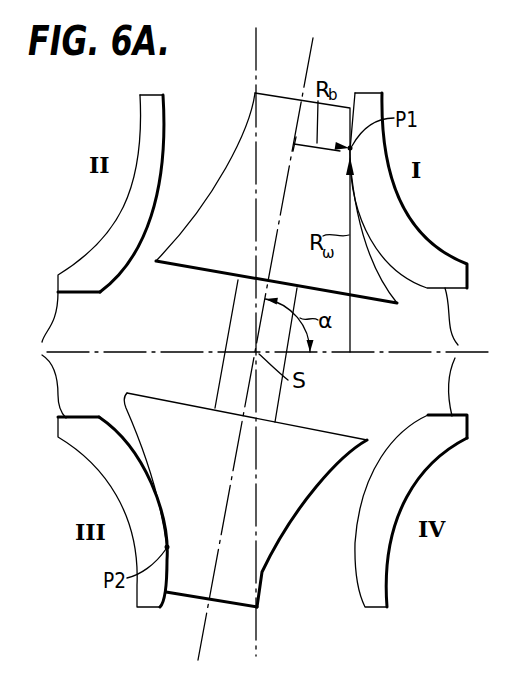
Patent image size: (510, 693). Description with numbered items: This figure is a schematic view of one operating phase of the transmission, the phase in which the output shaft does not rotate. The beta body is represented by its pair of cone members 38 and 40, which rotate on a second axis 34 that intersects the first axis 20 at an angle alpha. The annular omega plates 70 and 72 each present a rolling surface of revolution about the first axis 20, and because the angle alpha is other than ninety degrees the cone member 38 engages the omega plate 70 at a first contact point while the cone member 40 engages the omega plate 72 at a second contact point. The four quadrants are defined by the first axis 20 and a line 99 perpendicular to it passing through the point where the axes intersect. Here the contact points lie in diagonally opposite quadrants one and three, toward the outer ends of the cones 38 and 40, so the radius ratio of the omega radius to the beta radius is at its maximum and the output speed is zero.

The first axis 20 is at (366, 354).
The second axis 34 is at (322, 53).
The cone member 38 is at (235, 249).
The cone member 40 is at (219, 485).
The omega plate 70 is at (464, 352).
The omega plate 72 is at (42, 355).
The line 99 is at (258, 62).